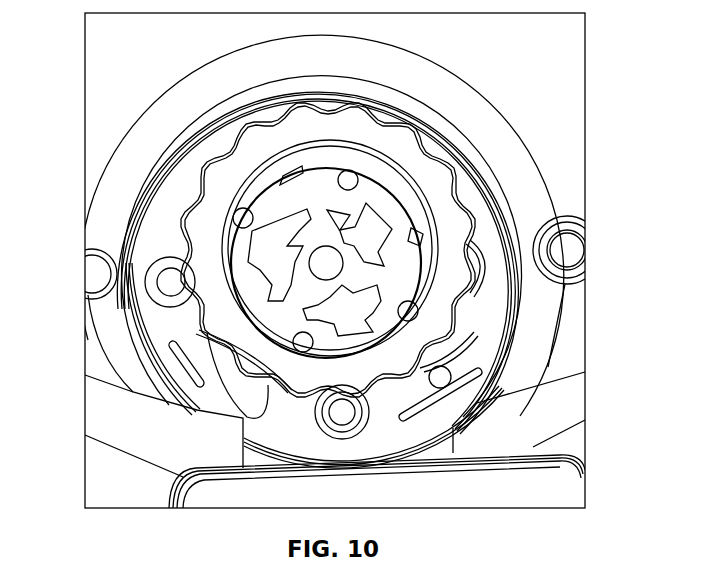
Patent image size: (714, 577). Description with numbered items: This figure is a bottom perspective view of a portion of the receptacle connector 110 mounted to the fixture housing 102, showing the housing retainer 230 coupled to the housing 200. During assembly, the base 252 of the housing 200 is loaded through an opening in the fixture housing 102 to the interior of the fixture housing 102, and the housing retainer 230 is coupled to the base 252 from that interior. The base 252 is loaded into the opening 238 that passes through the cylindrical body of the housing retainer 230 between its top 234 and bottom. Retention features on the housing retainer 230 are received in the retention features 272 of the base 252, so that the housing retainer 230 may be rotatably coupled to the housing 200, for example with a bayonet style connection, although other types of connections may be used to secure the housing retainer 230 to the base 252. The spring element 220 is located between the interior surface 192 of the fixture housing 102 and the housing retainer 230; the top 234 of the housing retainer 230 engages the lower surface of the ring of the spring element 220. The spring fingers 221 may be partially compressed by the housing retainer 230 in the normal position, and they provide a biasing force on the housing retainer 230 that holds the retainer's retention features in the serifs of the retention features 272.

The fixture housing 102 is at (557, 120).
The receptacle connector 110 is at (495, 191).
The interior surface 192 is at (460, 360).
The housing 200 is at (248, 281).
The spring element 220 is at (153, 245).
The spring fingers 221 is at (550, 466).
The housing retainer 230 is at (213, 208).
The top 234 is at (263, 385).
The opening 238 is at (240, 192).
The base 252 is at (412, 257).
The retention features 272 is at (422, 236).